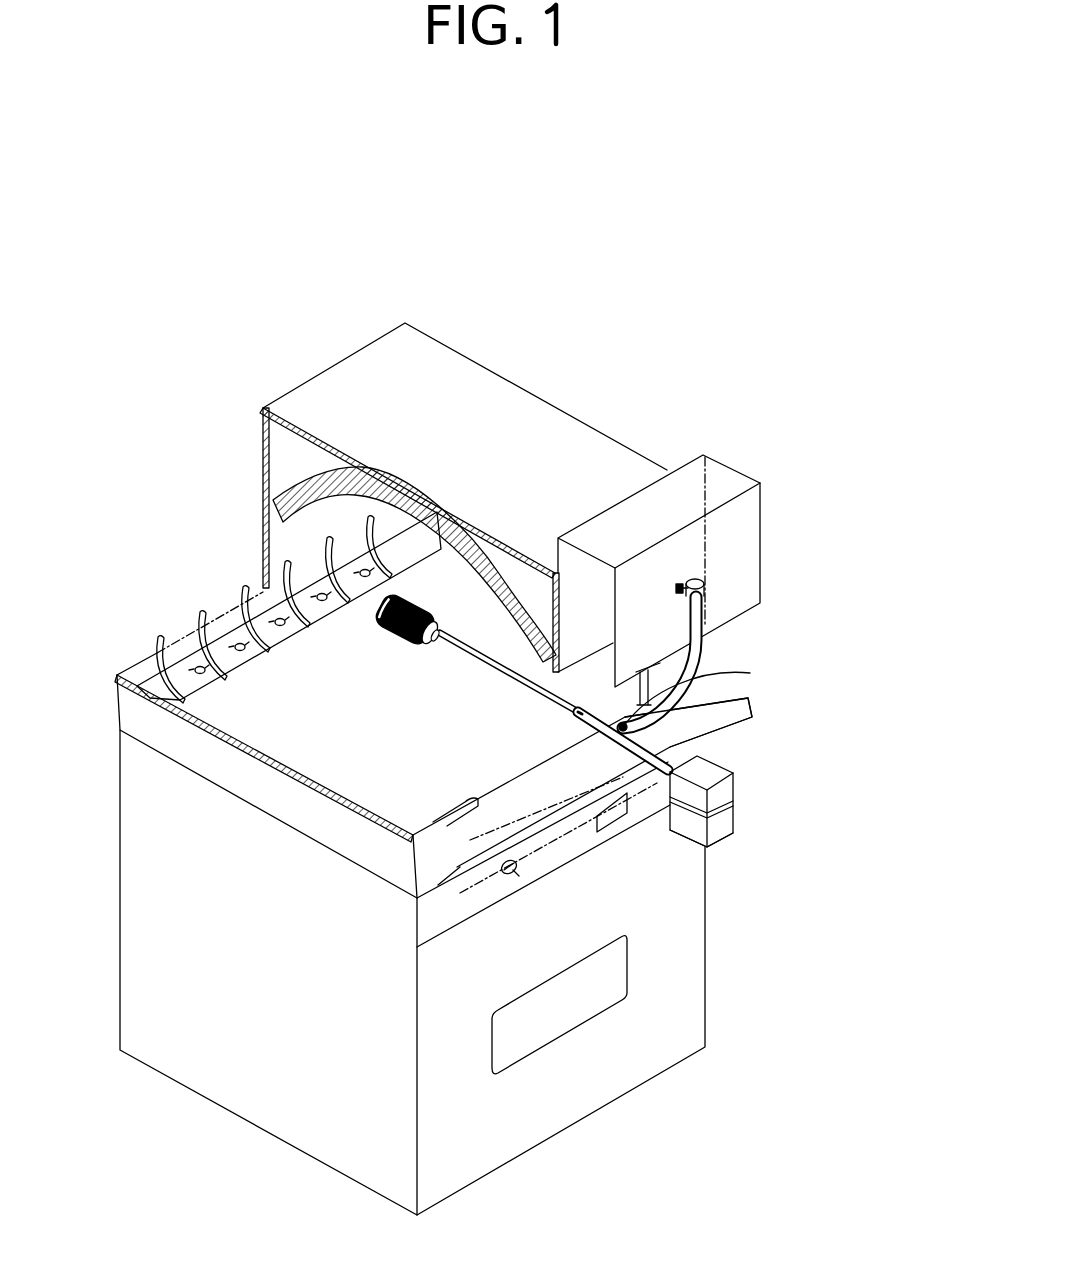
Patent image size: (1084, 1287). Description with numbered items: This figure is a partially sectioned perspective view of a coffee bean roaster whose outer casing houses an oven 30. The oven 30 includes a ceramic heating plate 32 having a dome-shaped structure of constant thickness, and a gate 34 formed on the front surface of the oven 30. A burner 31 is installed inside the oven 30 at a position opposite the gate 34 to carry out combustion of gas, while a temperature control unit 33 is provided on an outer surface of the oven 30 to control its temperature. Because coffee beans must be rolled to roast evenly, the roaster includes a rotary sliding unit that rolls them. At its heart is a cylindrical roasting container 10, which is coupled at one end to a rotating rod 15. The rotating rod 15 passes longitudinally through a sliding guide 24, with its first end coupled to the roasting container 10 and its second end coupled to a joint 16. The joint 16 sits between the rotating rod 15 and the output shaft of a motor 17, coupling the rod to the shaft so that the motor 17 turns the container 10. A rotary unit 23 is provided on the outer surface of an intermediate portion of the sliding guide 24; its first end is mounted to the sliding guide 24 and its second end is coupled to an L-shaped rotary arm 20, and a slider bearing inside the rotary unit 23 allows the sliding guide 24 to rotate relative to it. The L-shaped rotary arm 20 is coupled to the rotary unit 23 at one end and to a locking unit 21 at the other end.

The roasting container 10 is at (447, 595).
The rotating rod 15 is at (517, 678).
The joint 16 is at (672, 762).
The motor 17 is at (727, 792).
The L-shaped rotary arm 20 is at (706, 645).
The locking unit 21 is at (707, 587).
The rotary unit 23 is at (700, 692).
The sliding guide 24 is at (727, 721).
The oven 30 is at (372, 373).
The burner 31 is at (183, 630).
The ceramic heating plate 32 is at (273, 498).
The temperature control unit 33 is at (518, 875).
The gate 34 is at (640, 688).